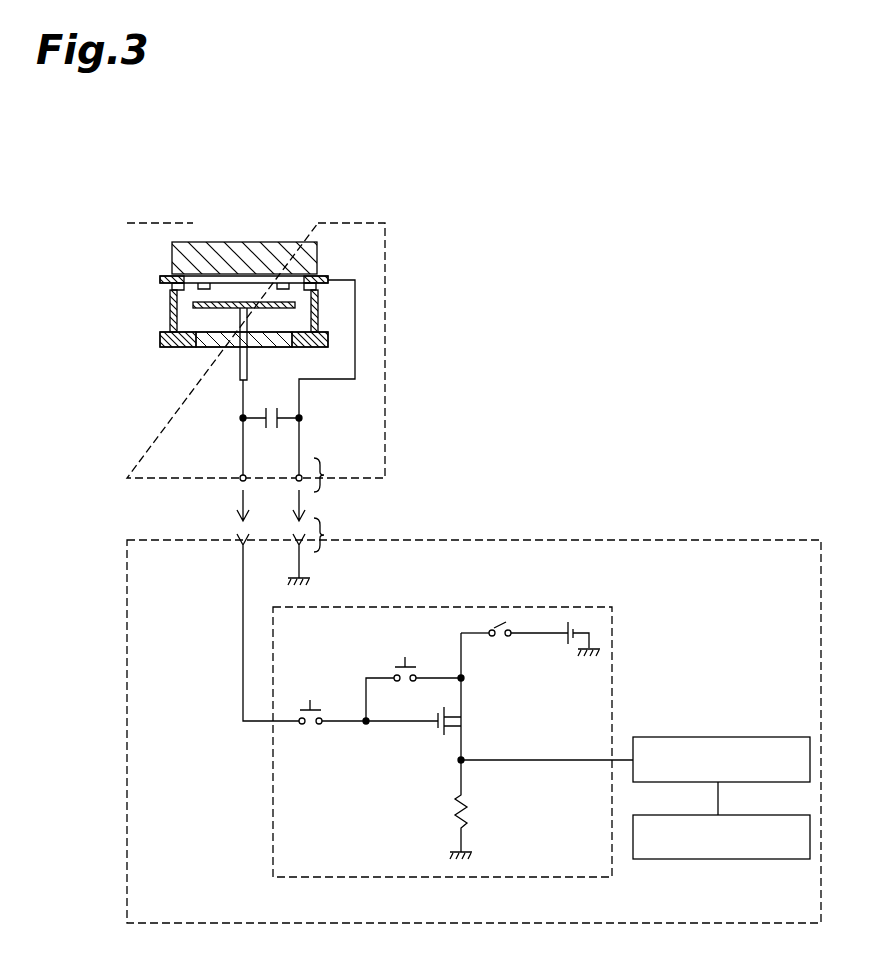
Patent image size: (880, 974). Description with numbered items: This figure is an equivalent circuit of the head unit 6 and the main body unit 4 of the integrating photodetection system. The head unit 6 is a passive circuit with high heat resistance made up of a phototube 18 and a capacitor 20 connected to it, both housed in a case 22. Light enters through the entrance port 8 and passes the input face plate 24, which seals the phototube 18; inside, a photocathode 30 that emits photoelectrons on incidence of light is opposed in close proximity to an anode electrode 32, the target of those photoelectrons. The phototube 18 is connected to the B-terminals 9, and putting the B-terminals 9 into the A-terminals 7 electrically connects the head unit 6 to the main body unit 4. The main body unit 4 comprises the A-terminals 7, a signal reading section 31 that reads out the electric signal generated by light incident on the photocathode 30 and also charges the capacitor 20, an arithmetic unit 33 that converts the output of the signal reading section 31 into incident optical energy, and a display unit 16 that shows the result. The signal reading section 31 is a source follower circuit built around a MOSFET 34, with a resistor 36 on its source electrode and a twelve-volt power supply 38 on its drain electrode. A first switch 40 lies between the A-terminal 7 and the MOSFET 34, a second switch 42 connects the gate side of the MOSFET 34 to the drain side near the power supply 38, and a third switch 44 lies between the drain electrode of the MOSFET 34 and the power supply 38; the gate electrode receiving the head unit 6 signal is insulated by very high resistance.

The main body unit 4 is at (678, 538).
The head unit 6 is at (110, 284).
The A-terminals 7 is at (322, 528).
The entrance port 8 is at (291, 220).
The B-terminals 9 is at (322, 470).
The display unit 16 is at (737, 860).
The phototube 18 is at (345, 318).
The capacitor 20 is at (302, 390).
The case 22 is at (127, 352).
The input face plate 24 is at (266, 252).
The photocathode 30 is at (230, 276).
The signal reading section 31 is at (613, 631).
The anode electrode 32 is at (200, 308).
The arithmetic unit 33 is at (736, 737).
The MOSFET 34 is at (470, 717).
The resistor 36 is at (470, 813).
The power supply 38 is at (564, 624).
The first switch 40 is at (311, 735).
The second switch 42 is at (388, 668).
The third switch 44 is at (493, 624).